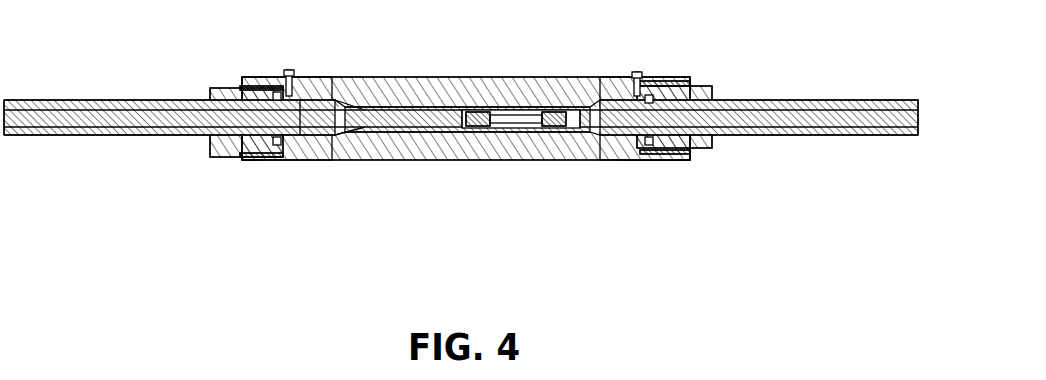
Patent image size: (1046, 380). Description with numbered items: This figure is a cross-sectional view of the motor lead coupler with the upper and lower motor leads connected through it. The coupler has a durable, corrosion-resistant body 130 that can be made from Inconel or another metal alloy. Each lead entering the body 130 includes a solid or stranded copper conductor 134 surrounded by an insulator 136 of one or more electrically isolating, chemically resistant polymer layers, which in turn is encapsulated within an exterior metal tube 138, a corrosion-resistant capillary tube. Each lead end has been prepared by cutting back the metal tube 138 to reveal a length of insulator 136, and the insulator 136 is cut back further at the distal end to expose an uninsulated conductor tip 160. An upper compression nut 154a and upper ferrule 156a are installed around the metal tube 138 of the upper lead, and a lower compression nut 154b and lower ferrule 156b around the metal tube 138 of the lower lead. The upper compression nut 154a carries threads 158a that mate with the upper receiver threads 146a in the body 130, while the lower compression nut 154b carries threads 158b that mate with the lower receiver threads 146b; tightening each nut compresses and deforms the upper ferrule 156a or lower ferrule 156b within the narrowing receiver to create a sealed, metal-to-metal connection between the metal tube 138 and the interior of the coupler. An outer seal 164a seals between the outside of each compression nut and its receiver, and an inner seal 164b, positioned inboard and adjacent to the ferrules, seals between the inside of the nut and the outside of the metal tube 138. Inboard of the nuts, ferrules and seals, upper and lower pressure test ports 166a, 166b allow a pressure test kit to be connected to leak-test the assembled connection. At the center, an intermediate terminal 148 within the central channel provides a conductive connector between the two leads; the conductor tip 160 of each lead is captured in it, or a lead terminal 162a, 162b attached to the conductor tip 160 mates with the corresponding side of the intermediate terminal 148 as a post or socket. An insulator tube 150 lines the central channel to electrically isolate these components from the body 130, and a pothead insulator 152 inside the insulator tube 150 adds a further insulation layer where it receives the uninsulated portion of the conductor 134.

The body 130 is at (392, 78).
The conductor 134 is at (890, 100).
The insulator 136 is at (400, 131).
The metal tube 138 is at (130, 136).
The upper receiver threads 146a is at (640, 160).
The lower receiver threads 146b is at (243, 161).
The intermediate terminal 148 is at (512, 110).
The insulator tube 150 is at (352, 90).
The pothead insulator 152 is at (455, 128).
The upper compression nut 154a is at (708, 87).
The lower compression nut 154b is at (208, 156).
The upper ferrule 156a is at (628, 77).
The lower ferrule 156b is at (308, 161).
The threads 158a is at (668, 158).
The threads 158b is at (280, 158).
The conductor tip 160 is at (480, 128).
The lead terminal 162a is at (563, 110).
The lead terminal 162b is at (466, 110).
The outer seal 164a is at (240, 80).
The inner seal 164b is at (272, 88).
The upper pressure test port 166a is at (638, 72).
The lower pressure test port 166b is at (289, 70).